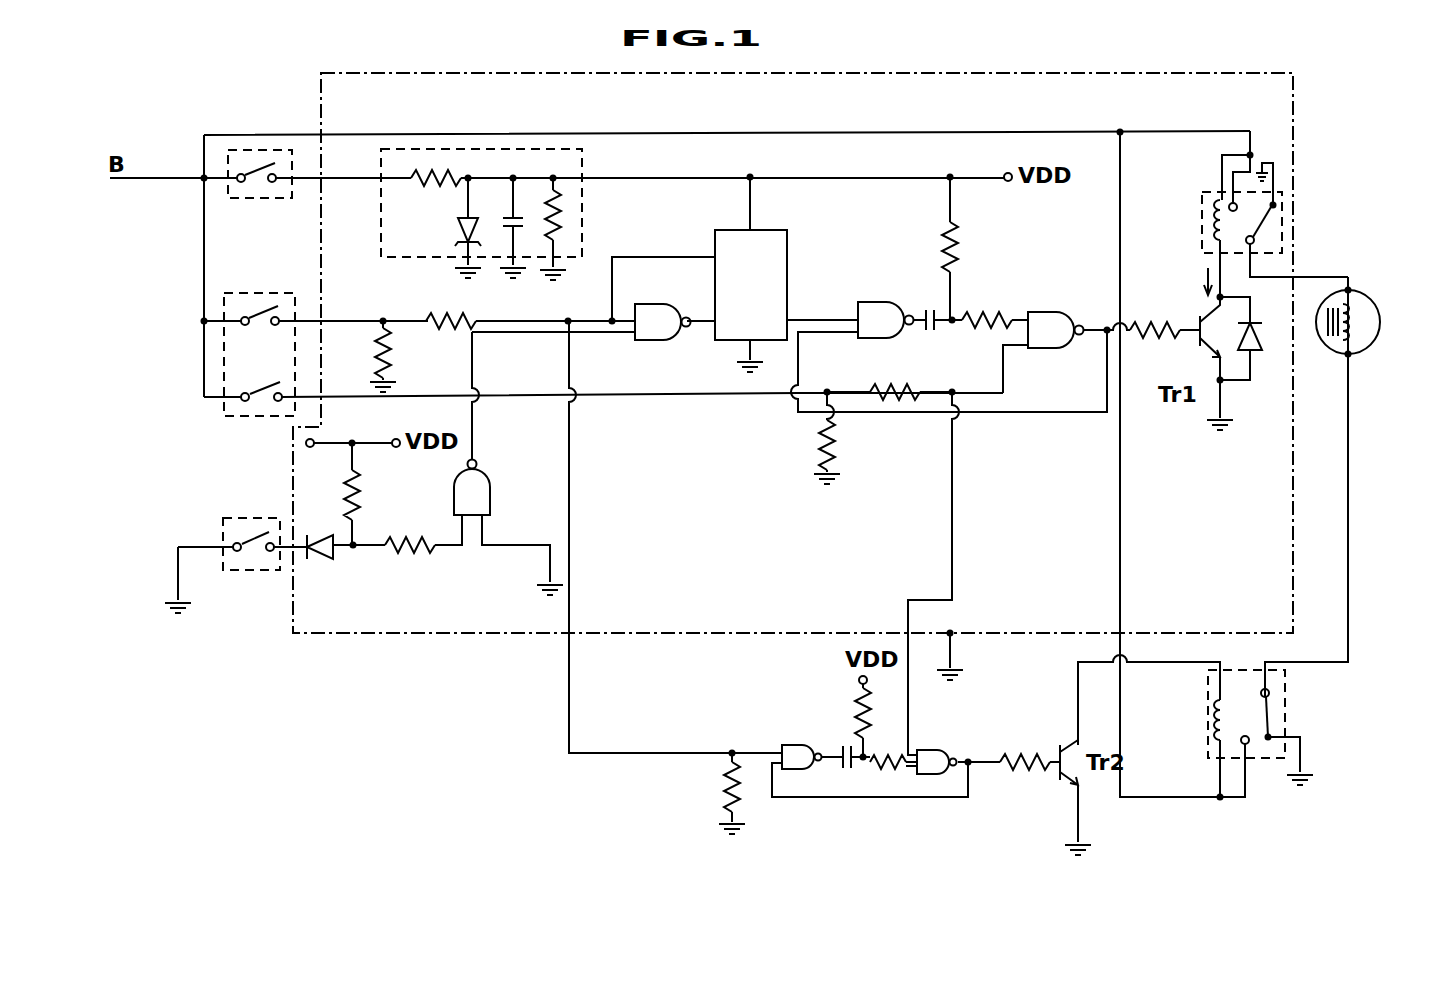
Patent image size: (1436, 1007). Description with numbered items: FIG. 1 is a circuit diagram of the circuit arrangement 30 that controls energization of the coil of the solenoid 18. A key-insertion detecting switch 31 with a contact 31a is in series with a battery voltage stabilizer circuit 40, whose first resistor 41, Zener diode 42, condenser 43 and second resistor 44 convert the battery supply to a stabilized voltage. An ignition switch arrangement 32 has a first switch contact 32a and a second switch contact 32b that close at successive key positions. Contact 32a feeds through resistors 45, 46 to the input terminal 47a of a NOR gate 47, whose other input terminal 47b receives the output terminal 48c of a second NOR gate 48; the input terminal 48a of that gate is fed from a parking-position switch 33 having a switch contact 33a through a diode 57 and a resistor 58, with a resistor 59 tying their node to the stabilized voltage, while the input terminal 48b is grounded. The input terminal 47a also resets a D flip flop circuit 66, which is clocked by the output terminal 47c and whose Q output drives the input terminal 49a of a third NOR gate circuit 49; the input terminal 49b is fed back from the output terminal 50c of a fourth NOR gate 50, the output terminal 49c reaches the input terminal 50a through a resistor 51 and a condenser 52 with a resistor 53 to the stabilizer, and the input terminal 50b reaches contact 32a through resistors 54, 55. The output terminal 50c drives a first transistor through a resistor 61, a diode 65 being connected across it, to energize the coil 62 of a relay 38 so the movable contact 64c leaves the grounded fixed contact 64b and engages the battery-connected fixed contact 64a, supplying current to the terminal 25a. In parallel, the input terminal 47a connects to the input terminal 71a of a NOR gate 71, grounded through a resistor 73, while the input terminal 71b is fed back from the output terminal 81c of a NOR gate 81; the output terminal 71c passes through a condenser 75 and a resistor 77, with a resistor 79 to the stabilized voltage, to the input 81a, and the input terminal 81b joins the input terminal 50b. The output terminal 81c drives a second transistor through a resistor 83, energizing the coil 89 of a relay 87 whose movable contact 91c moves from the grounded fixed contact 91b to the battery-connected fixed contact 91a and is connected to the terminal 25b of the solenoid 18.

The solenoid 18 is at (1380, 322).
The terminal 25a is at (1352, 290).
The terminal 25b is at (1352, 354).
The circuit arrangement 30 is at (1081, 70).
The switch 31 is at (266, 150).
The contact 31a is at (259, 192).
The ignition switch arrangement 32 is at (224, 362).
The first switch contact 32a is at (252, 315).
The second switch contact 32b is at (258, 401).
The switch 33 is at (246, 518).
The switch contact 33a is at (253, 562).
The relay 38 is at (1282, 253).
The battery voltage stabilizer circuit 40 is at (524, 149).
The first resistor 41 is at (428, 175).
The Zener diode 42 is at (470, 215).
The condenser 43 is at (518, 216).
The second resistor 44 is at (565, 215).
The resistor 45 is at (451, 328).
The resistor 46 is at (380, 350).
The NOR gate 47 is at (672, 294).
The input terminal 47a is at (611, 318).
The input terminal 47b is at (626, 334).
The output terminal 47c is at (688, 327).
The second NOR gate 48 is at (490, 500).
The input terminal 48a is at (460, 525).
The input terminal 48b is at (486, 530).
The output terminal 48c is at (479, 464).
The third NOR gate circuit 49 is at (880, 304).
The input terminal 49a is at (856, 318).
The input terminal 49b is at (856, 334).
The output terminal 49c is at (915, 316).
The fourth NOR gate 50 is at (1056, 314).
The input terminal 50a is at (1021, 316).
The input terminal 50b is at (1031, 347).
The output terminal 50c is at (1108, 328).
The resistor 51 is at (972, 315).
The condenser 52 is at (940, 329).
The resistor 53 is at (960, 241).
The resistor 54 is at (900, 400).
The resistor 55 is at (845, 440).
The diode 57 is at (322, 560).
The resistor 58 is at (428, 553).
The resistor 59 is at (346, 498).
The resistor 61 is at (1172, 336).
The coil 62 is at (1205, 222).
The fixed contact 64a is at (1231, 203).
The fixed contact 64b is at (1278, 200).
The movable contact 64c is at (1285, 216).
The diode 65 is at (1262, 356).
The D flip flop circuit 66 is at (787, 240).
The NOR gate 71 is at (801, 746).
The input terminal 71a is at (782, 751).
The input terminal 71b is at (776, 767).
The output terminal 71c is at (821, 754).
The resistor 73 is at (716, 793).
The condenser 75 is at (845, 770).
The resistor 77 is at (886, 763).
The resistor 79 is at (867, 708).
The NOR gate 81 is at (950, 752).
The input 81a is at (917, 752).
The input terminal 81b is at (930, 773).
The output terminal 81c is at (958, 758).
The resistor 83 is at (1031, 756).
The relay 87 is at (1285, 701).
The coil 89 is at (1208, 735).
The fixed contact 91a is at (1248, 748).
The fixed contact 91b is at (1272, 740).
The movable contact 91c is at (1266, 705).